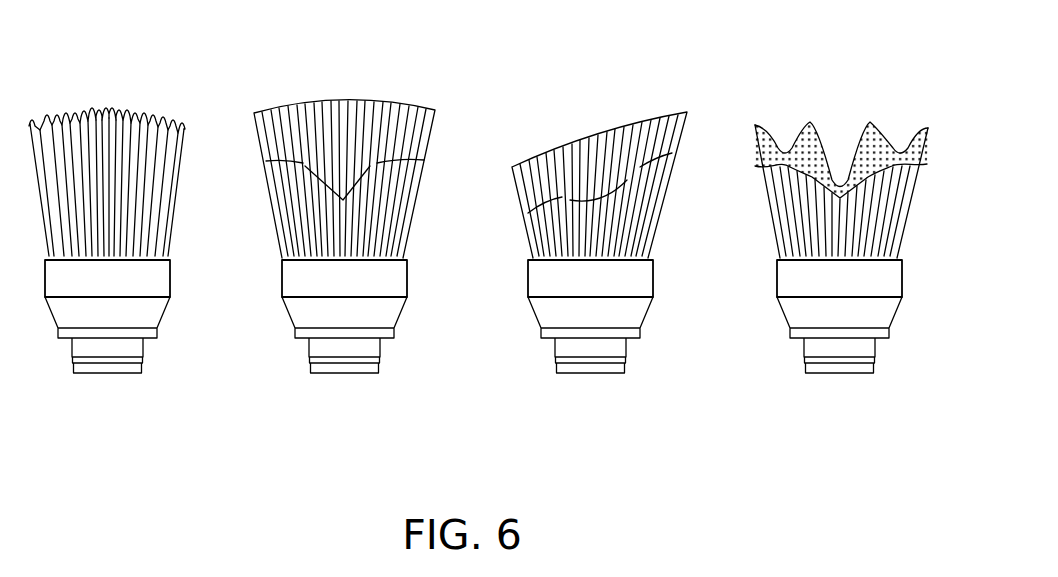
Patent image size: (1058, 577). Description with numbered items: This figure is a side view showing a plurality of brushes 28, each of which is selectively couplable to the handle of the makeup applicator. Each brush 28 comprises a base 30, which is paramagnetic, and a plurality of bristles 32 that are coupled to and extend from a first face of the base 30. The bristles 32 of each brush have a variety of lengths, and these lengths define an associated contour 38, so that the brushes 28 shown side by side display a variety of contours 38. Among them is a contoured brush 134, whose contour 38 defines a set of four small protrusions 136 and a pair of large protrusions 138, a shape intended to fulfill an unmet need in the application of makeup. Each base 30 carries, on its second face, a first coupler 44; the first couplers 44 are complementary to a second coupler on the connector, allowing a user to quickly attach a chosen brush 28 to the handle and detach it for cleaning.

The brush 28 is at (543, 234).
The base 30 is at (637, 280).
The bristles 32 is at (560, 167).
The contour 38 is at (908, 134).
The first coupler 44 is at (820, 373).
The contoured brush 134 is at (908, 218).
The small protrusions 136 is at (757, 126).
The large protrusions 138 is at (781, 172).